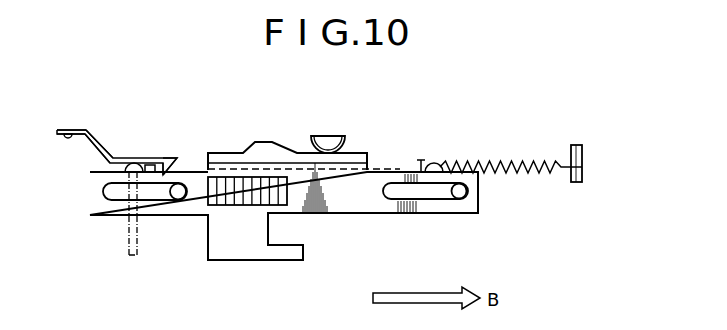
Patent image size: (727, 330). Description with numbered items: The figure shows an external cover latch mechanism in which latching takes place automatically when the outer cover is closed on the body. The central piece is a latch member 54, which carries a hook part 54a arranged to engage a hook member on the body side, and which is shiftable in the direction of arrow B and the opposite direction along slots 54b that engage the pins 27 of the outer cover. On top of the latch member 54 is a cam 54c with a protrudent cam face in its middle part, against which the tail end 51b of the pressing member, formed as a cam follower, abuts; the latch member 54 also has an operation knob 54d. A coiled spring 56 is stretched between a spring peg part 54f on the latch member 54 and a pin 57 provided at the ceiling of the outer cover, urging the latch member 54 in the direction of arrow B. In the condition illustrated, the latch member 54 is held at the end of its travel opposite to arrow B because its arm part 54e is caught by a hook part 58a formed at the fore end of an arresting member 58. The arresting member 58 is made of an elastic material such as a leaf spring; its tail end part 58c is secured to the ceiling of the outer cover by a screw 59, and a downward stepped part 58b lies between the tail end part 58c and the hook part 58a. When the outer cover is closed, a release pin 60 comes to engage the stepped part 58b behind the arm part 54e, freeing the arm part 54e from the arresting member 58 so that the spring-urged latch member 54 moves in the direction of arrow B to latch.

The latch member 54 is at (348, 214).
The hook part 54a is at (276, 259).
The slots 54b is at (108, 216).
The cam 54c is at (258, 141).
The operation knob 54d is at (236, 206).
The arm part 54e is at (153, 160).
The spring peg part 54f is at (421, 160).
The tail end 51b is at (335, 134).
The coiled spring 56 is at (514, 163).
The pin 57 is at (583, 156).
The arresting member 58 is at (133, 146).
The hook part 58a is at (174, 158).
The downward stepped part 58b is at (125, 157).
The tail end part 58c is at (73, 128).
The screw 59 is at (66, 140).
The release pin 60 is at (137, 256).
The pins 27 is at (180, 201).